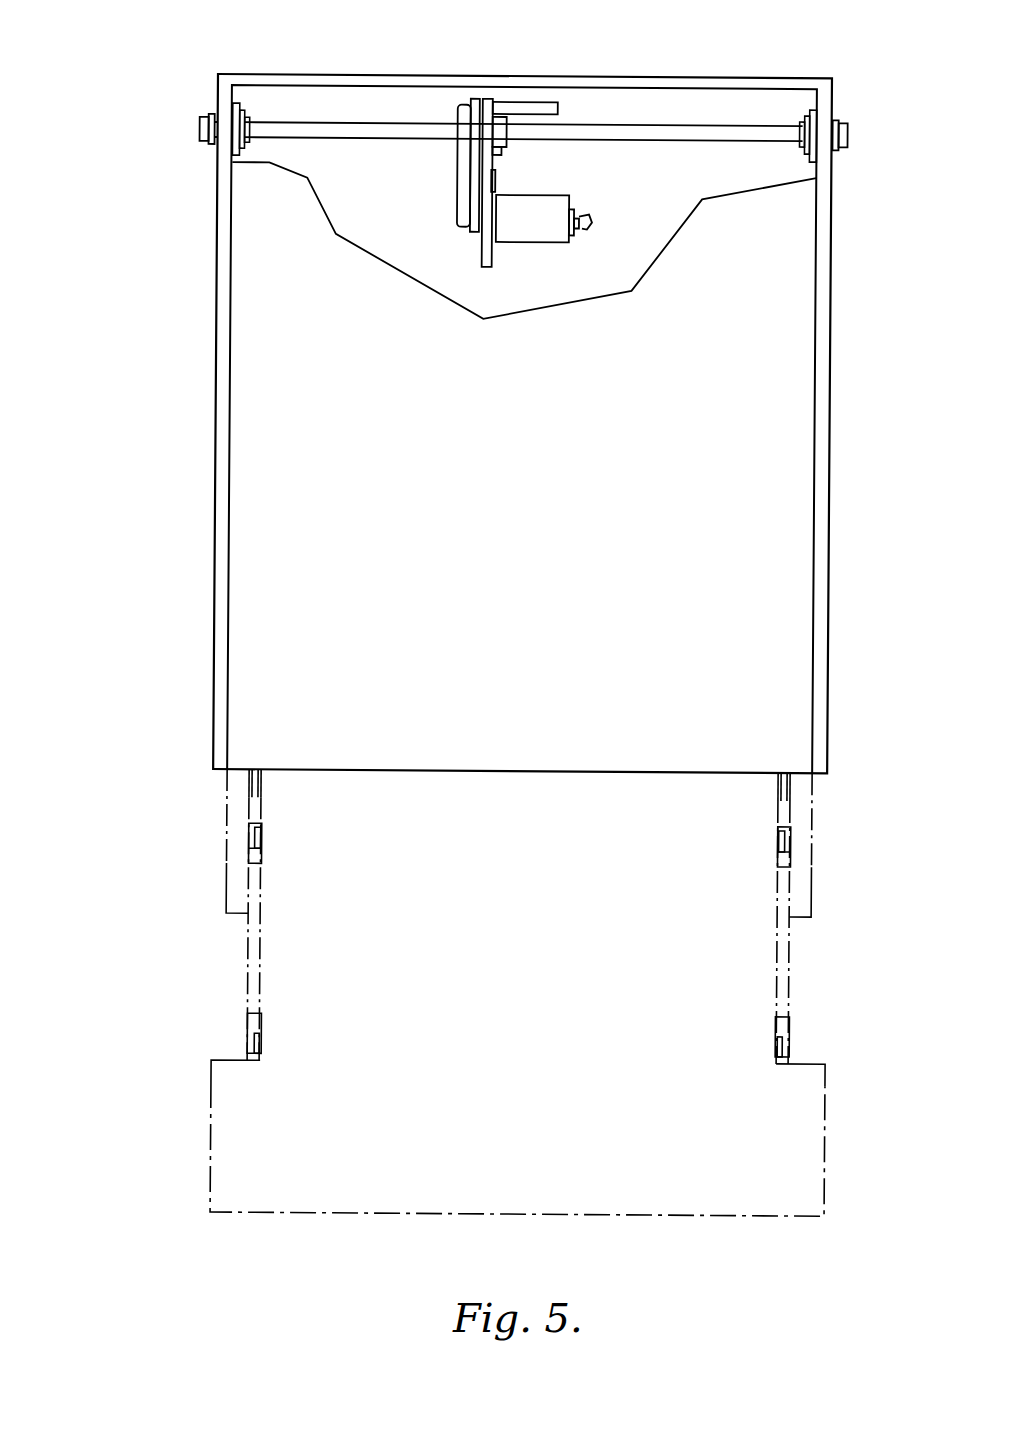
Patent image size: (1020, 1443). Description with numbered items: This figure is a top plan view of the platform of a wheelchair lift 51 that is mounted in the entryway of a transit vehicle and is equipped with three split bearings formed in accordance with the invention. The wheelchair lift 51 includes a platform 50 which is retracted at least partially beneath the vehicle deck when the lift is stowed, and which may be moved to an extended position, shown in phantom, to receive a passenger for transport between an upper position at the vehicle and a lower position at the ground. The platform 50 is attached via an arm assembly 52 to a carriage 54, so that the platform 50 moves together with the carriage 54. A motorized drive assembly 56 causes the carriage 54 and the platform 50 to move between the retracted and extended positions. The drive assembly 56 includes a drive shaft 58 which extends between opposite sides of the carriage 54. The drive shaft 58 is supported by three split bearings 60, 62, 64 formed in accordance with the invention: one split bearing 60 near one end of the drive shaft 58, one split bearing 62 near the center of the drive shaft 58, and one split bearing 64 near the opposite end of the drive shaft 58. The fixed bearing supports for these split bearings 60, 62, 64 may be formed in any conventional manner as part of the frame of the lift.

The platform 50 is at (777, 435).
The wheelchair lift 51 is at (175, 461).
The arm assembly 52 is at (250, 977).
The carriage 54 is at (248, 850).
The motorized drive assembly 56 is at (533, 212).
The drive shaft 58 is at (645, 128).
The split bearing 60 is at (248, 122).
The split bearing 62 is at (500, 112).
The split bearing 64 is at (815, 108).